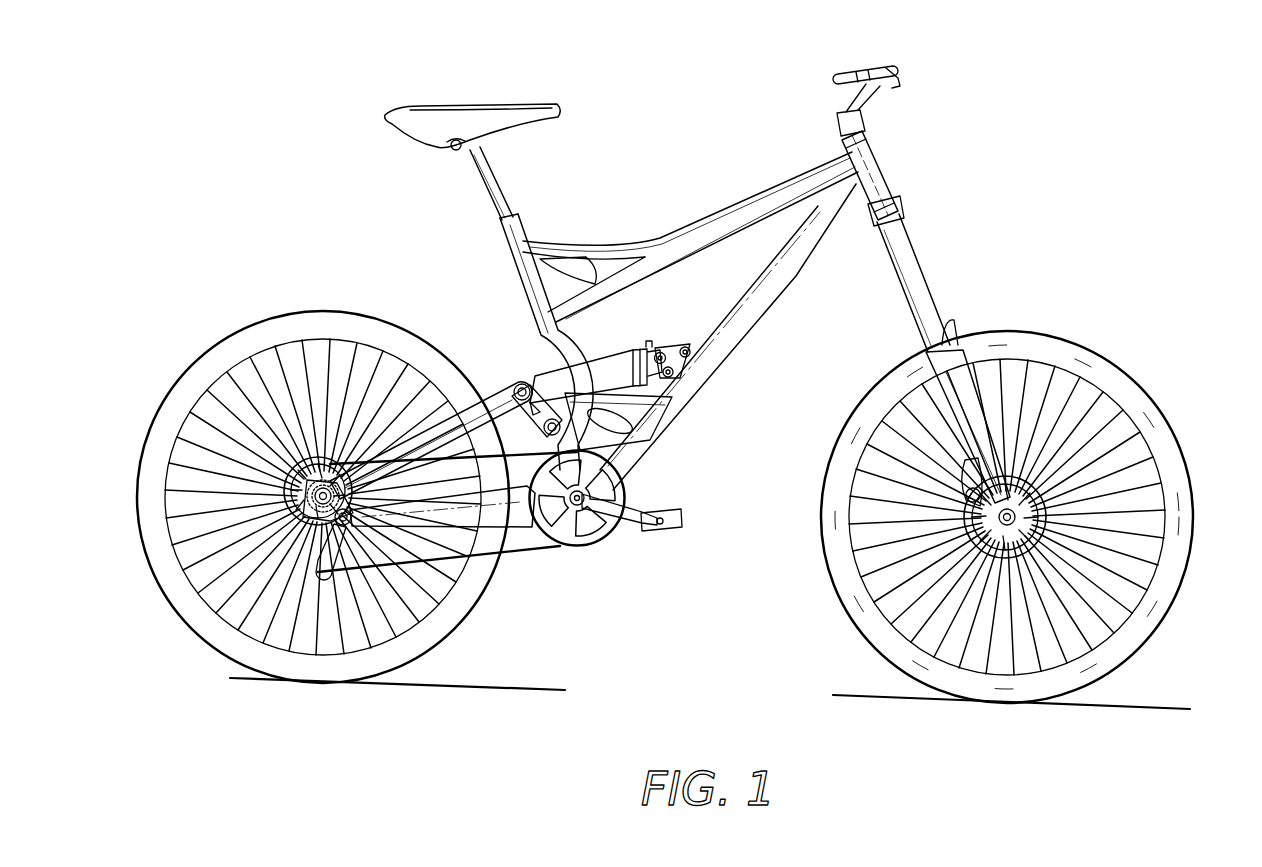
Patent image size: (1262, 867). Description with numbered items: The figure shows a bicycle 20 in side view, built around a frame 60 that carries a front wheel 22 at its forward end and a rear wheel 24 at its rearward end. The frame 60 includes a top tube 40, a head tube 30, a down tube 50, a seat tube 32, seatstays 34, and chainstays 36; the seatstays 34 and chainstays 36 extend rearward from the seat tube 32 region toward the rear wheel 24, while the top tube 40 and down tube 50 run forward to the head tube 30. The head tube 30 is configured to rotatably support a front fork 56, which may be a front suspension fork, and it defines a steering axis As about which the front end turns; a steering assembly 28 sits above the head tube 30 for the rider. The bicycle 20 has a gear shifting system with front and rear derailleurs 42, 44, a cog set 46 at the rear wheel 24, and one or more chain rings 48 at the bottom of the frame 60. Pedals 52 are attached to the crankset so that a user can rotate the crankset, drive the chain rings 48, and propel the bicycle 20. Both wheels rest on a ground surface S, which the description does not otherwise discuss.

The bicycle 20 is at (750, 88).
The front wheel 22 is at (1088, 342).
The rear wheel 24 is at (307, 480).
The steering assembly 28 is at (897, 70).
The head tube 30 is at (893, 170).
The seat tube 32 is at (510, 188).
The seatstays 34 is at (480, 388).
The chainstays 36 is at (470, 533).
The top tube 40 is at (688, 230).
The front derailleur 42 is at (550, 443).
The rear derailleur 44 is at (205, 600).
The cog set 46 is at (290, 491).
The chain rings 48 is at (620, 522).
The down tube 50 is at (757, 303).
The pedals 52 is at (672, 513).
The front fork 56 is at (925, 258).
The frame 60 is at (755, 182).
The ground surface S is at (1160, 703).
The steering axis As is at (842, 103).